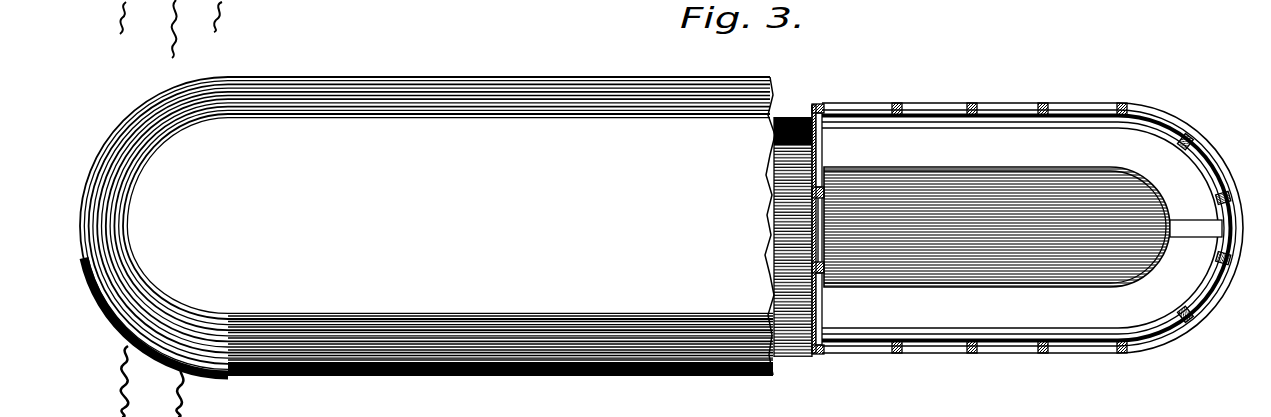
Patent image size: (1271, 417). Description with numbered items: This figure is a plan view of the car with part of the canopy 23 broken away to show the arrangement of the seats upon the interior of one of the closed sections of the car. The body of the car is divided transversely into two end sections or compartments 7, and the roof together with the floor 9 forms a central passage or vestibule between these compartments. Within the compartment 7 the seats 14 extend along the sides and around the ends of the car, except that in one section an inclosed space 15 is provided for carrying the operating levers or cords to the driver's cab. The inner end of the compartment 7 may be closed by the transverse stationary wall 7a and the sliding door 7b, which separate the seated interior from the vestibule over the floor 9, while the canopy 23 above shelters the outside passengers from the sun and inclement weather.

The canopy 23 is at (427, 226).
The floor 9 is at (793, 231).
The transverse stationary walls 7a is at (826, 157).
The sliding doors 7b is at (826, 235).
The seats 14 is at (1032, 228).
The end sections or compartments 7 is at (997, 227).
The inclosed space 15 is at (1196, 228).